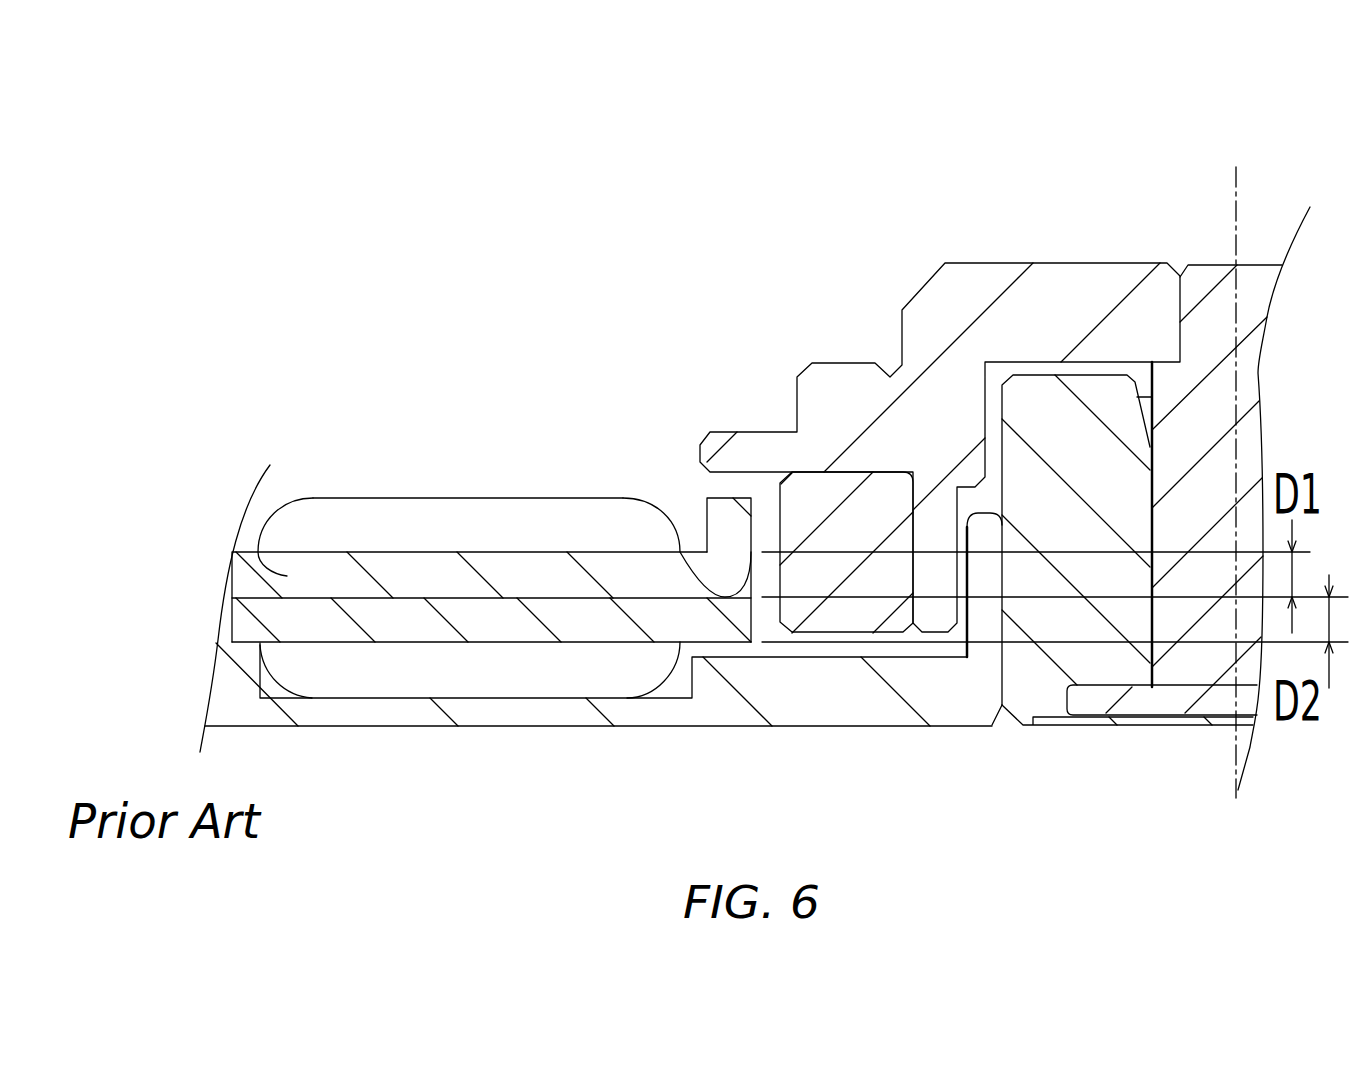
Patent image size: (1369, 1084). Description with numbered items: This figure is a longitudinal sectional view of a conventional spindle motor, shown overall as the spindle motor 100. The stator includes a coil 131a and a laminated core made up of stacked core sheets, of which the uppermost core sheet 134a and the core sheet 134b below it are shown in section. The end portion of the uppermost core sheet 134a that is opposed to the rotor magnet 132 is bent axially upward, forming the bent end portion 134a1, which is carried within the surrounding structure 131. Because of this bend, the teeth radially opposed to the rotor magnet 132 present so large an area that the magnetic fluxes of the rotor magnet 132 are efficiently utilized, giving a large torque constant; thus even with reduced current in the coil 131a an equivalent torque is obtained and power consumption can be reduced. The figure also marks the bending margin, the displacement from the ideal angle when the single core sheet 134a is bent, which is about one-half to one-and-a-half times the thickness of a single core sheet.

The disk drive device (prior art) 100 is at (1162, 130).
The housing 131 is at (568, 447).
The coil 131a is at (453, 530).
The rotor magnet 132 is at (826, 502).
The uppermost core sheet 134a is at (288, 576).
The bent end portion of upper plate 134a1 is at (735, 531).
The lower plate 134b is at (287, 620).